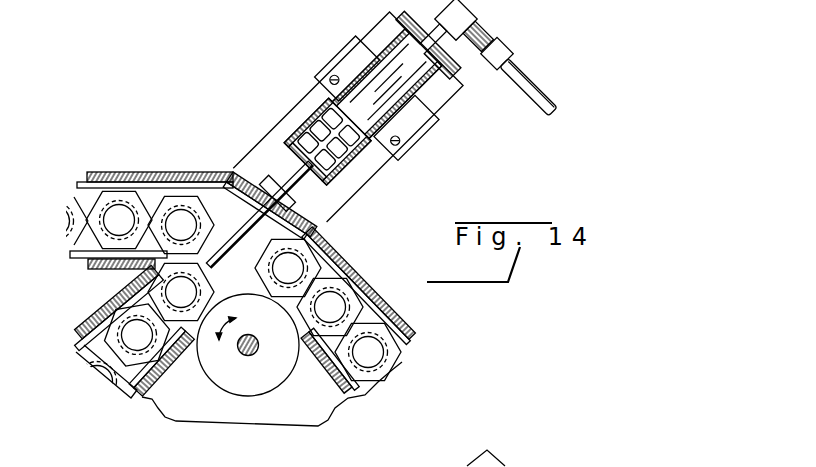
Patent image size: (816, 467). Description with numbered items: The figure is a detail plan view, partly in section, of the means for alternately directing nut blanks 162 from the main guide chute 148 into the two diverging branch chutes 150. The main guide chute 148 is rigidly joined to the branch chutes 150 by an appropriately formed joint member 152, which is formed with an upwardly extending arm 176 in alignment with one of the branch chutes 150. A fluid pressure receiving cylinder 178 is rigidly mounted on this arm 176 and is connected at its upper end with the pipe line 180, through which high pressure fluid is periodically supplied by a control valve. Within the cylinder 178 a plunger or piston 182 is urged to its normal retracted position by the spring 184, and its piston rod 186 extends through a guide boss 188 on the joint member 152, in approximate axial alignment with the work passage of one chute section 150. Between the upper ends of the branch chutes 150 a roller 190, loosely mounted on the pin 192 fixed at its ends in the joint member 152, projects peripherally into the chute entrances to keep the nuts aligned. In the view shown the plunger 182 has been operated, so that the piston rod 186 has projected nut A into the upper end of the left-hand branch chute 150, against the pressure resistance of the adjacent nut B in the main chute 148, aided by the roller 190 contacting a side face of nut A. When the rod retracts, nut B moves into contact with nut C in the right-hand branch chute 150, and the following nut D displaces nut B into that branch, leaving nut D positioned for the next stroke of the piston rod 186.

The main guide chute 148 is at (70, 253).
The branch chutes 150 is at (418, 343).
The joint member 152 is at (381, 298).
The nut blanks 162 is at (386, 366).
The arm 176 is at (369, 183).
The fluid pressure receiving cylinder 178 is at (383, 52).
The pipe line 180 is at (537, 94).
The plunger or piston 182 is at (384, 153).
The spring 184 is at (311, 124).
The piston rod 186 is at (322, 207).
The guide boss 188 is at (277, 180).
The roller 190 is at (246, 387).
The pin 192 is at (257, 352).
The nut A is at (190, 325).
The nut B is at (183, 197).
The nut C is at (310, 260).
The nut D is at (124, 190).